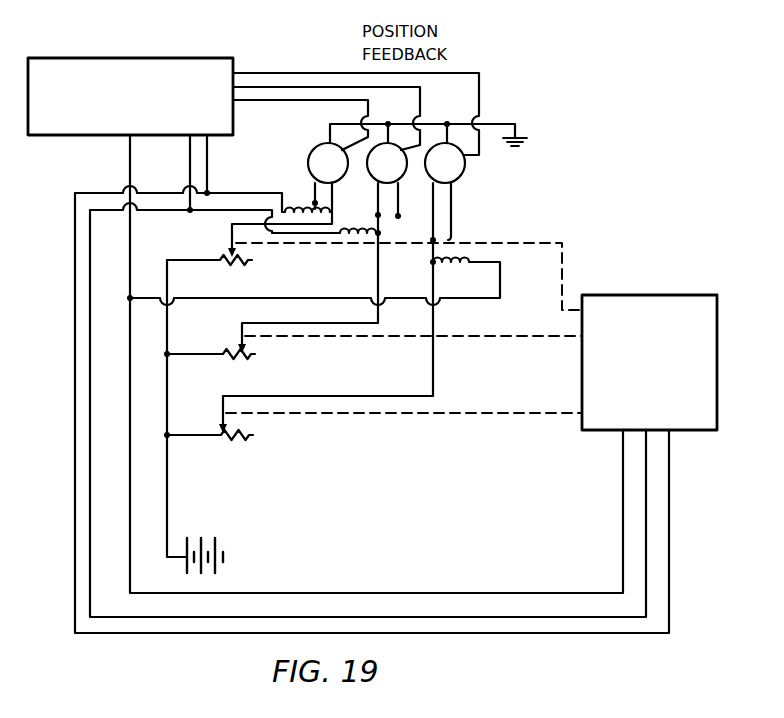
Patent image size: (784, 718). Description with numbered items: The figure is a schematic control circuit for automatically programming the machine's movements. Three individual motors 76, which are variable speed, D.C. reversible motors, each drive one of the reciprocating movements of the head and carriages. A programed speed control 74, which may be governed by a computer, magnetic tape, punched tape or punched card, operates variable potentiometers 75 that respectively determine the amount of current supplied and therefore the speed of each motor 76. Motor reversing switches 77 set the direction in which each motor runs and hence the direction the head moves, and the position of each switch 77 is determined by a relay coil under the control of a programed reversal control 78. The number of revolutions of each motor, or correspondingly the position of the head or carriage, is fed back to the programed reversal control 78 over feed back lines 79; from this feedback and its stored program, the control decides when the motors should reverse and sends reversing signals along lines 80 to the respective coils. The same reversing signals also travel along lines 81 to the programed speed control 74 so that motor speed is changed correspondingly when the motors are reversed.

The programed speed control 74 is at (707, 403).
The variable potentiometers 75 is at (244, 358).
The motors 76 is at (464, 172).
The motor reversing switches 77 is at (437, 222).
The programed reversal control 78 is at (137, 58).
The feed back lines 79 is at (331, 73).
The lines 80 is at (208, 163).
The lines 81 is at (563, 618).